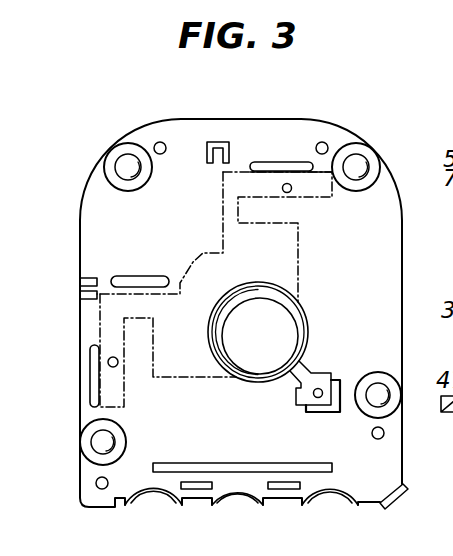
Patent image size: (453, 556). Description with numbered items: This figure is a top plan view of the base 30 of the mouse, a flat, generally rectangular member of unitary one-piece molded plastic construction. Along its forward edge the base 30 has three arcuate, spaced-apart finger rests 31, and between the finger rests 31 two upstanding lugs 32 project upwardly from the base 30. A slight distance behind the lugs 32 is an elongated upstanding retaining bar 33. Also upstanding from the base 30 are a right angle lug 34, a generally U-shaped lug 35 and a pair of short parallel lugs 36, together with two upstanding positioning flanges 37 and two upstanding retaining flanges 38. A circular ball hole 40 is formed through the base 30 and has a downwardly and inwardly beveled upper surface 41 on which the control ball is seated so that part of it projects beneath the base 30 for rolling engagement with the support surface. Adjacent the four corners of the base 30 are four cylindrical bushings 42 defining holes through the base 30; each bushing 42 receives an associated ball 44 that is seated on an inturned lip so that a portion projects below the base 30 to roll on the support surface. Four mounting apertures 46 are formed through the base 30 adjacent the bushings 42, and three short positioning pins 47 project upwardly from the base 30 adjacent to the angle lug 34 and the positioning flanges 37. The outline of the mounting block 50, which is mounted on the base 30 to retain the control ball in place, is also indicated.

The base 30 is at (148, 119).
The finger rests 31 is at (140, 504).
The upstanding lugs 32 is at (283, 490).
The retaining bar 33 is at (223, 463).
The right angle lug 34 is at (326, 413).
The U-shaped lug 35 is at (222, 141).
The short parallel lugs 36 is at (80, 282).
The positioning flanges 37 is at (284, 162).
The retaining flanges 38 is at (155, 276).
The ball hole 40 is at (270, 299).
The beveled upper surface 41 is at (219, 334).
The cylindrical bushings 42 is at (366, 152).
The ball 44 is at (366, 168).
The mounting apertures 46 is at (323, 142).
The positioning pins 47 is at (291, 191).
The mounting block 50 is at (300, 271).